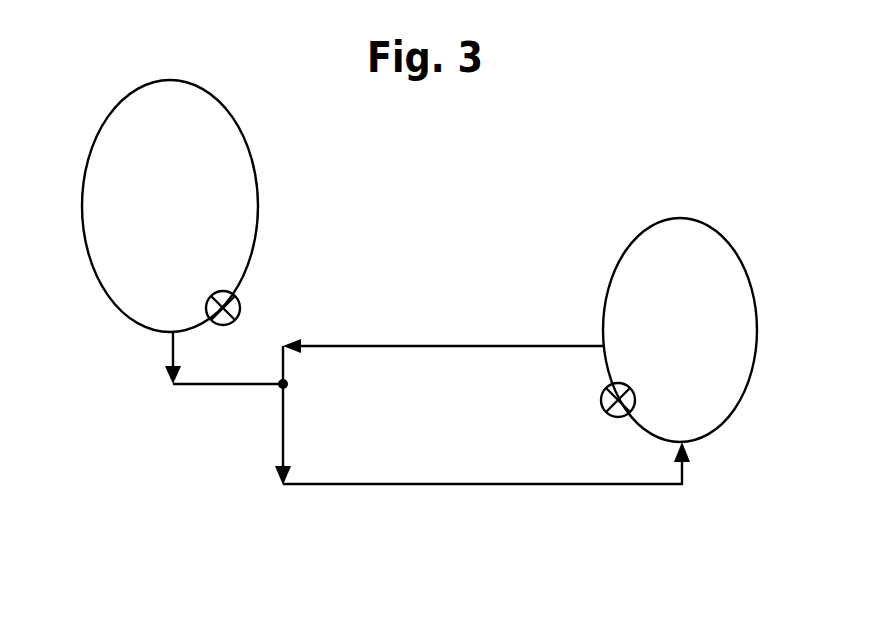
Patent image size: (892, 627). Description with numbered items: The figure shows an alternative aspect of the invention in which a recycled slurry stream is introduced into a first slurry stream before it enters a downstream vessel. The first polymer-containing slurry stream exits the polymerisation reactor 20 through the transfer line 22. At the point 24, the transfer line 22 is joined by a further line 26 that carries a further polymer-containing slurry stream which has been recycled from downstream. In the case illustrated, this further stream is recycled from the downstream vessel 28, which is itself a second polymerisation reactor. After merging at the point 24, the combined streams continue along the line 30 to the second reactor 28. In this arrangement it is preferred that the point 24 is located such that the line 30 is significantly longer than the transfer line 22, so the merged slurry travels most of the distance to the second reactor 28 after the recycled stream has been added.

The polymerisation reactor 20 is at (114, 110).
The transfer line 22 is at (213, 384).
The point 24 is at (277, 386).
The further line 26 is at (457, 346).
The downstream vessel 28 is at (743, 262).
The line 30 is at (517, 484).